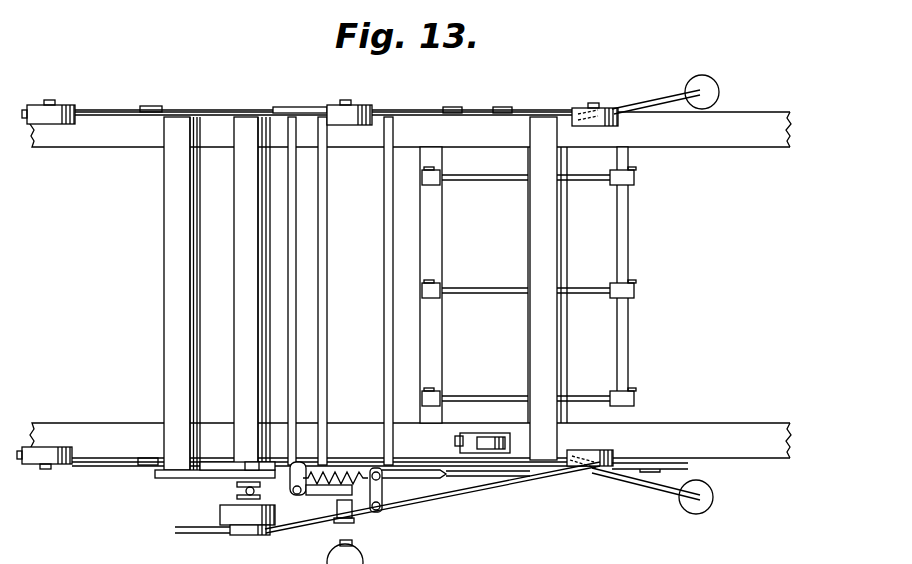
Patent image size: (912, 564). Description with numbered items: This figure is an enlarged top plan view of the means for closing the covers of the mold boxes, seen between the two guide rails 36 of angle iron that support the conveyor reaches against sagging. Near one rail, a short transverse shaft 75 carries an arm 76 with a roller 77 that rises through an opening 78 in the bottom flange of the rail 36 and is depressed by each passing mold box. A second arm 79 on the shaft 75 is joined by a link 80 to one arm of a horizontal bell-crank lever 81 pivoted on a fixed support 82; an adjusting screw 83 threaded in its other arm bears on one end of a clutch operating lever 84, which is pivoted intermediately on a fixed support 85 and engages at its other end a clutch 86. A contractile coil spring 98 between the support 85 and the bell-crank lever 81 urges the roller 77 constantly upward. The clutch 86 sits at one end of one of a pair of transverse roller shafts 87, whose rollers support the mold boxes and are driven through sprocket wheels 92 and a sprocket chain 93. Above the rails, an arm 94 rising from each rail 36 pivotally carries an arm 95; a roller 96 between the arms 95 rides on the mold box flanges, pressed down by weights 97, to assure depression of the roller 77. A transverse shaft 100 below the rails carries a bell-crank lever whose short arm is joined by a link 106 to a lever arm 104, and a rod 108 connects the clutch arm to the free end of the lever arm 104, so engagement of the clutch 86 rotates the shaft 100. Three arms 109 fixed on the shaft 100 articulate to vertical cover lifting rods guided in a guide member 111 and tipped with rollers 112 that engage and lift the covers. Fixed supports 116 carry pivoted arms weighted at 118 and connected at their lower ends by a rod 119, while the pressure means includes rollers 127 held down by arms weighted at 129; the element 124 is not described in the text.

The rails 36 is at (104, 137).
The shaft 75 is at (500, 466).
The arm 76 is at (468, 433).
The roller 77 is at (493, 440).
The opening 78 is at (460, 440).
The second arm 79 is at (460, 472).
The link 80 is at (406, 478).
The bell-crank lever 81 is at (360, 508).
The fixed support 82 is at (385, 496).
The adjusting screw 83 is at (340, 524).
The clutch operating lever 84 is at (318, 492).
The fixed support 85 is at (298, 470).
The clutch 86 is at (225, 508).
The shafts 87 is at (247, 467).
The sprocket wheels 92 is at (172, 476).
The sprocket chain 93 is at (212, 477).
The arm 94 is at (510, 112).
The arm 95 is at (653, 90).
The roller 96 is at (493, 288).
The weights 97 is at (717, 90).
The contractile coil spring 98 is at (330, 478).
The shaft 100 is at (632, 256).
The lever arm 104 is at (688, 467).
The link 106 is at (622, 470).
The rod 108 is at (517, 492).
The arms 109 is at (480, 172).
The guide member 111 is at (436, 312).
The rollers 112 is at (420, 285).
The fixed support 116 is at (302, 107).
The weight 118 is at (366, 106).
The rod 119 is at (327, 340).
The bar 124 is at (385, 220).
The rollers 127 is at (238, 323).
The weight 129 is at (63, 464).